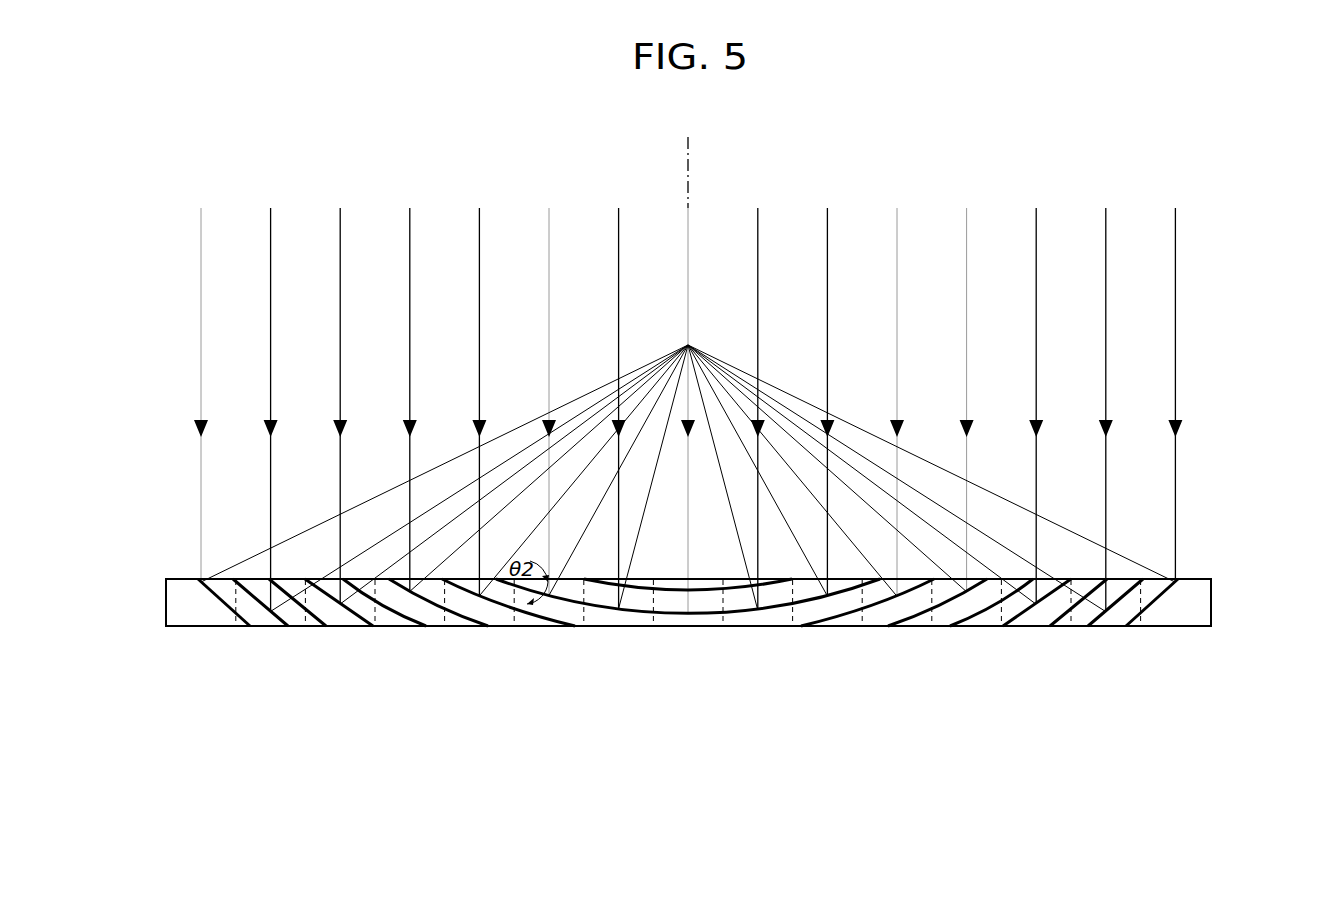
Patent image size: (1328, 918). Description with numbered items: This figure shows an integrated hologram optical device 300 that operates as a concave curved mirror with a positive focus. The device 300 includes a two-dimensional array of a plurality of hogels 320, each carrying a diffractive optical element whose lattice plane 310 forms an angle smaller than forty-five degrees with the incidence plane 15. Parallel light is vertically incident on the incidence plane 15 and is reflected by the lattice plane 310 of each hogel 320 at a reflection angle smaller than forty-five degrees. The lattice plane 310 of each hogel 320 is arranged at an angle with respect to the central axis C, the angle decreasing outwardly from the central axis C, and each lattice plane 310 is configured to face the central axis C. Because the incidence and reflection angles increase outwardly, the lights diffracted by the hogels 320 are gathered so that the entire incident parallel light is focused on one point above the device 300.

The integrated hologram optical device 300 is at (704, 626).
The incidence plane 15 is at (180, 579).
The lattice plane 310 is at (222, 601).
The hogels 320 is at (1178, 615).
The central axis C is at (688, 187).